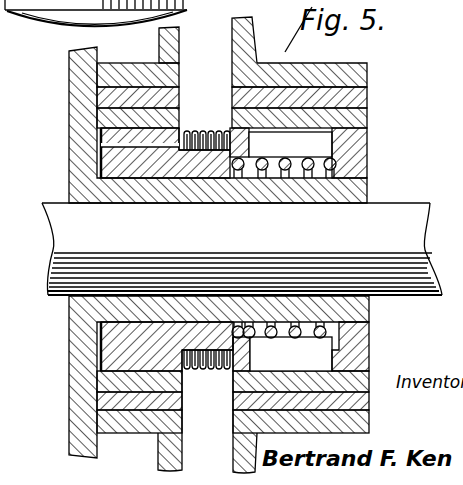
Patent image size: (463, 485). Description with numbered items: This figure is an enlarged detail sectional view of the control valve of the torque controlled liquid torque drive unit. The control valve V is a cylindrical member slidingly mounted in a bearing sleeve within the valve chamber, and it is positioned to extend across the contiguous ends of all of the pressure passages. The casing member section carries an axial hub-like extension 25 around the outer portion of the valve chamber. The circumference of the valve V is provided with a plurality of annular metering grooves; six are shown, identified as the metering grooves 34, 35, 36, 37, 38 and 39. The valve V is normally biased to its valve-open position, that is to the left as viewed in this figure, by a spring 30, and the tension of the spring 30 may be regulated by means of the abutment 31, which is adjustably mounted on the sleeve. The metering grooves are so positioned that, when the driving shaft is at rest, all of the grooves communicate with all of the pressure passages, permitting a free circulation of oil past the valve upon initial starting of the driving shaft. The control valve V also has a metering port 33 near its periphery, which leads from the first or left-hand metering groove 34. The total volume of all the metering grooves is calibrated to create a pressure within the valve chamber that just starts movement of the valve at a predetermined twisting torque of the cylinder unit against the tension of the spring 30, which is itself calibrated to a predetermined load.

The axial hub-like extension 25 is at (368, 77).
The spring 30 is at (365, 158).
The abutment 31 is at (365, 333).
The metering port 33 is at (115, 150).
The first metering groove 34 is at (176, 178).
The second metering groove 35 is at (193, 371).
The third metering groove 36 is at (210, 146).
The fourth metering groove 37 is at (209, 368).
The fifth metering groove 38 is at (222, 170).
The sixth metering groove 39 is at (249, 135).
The control valve V is at (115, 347).